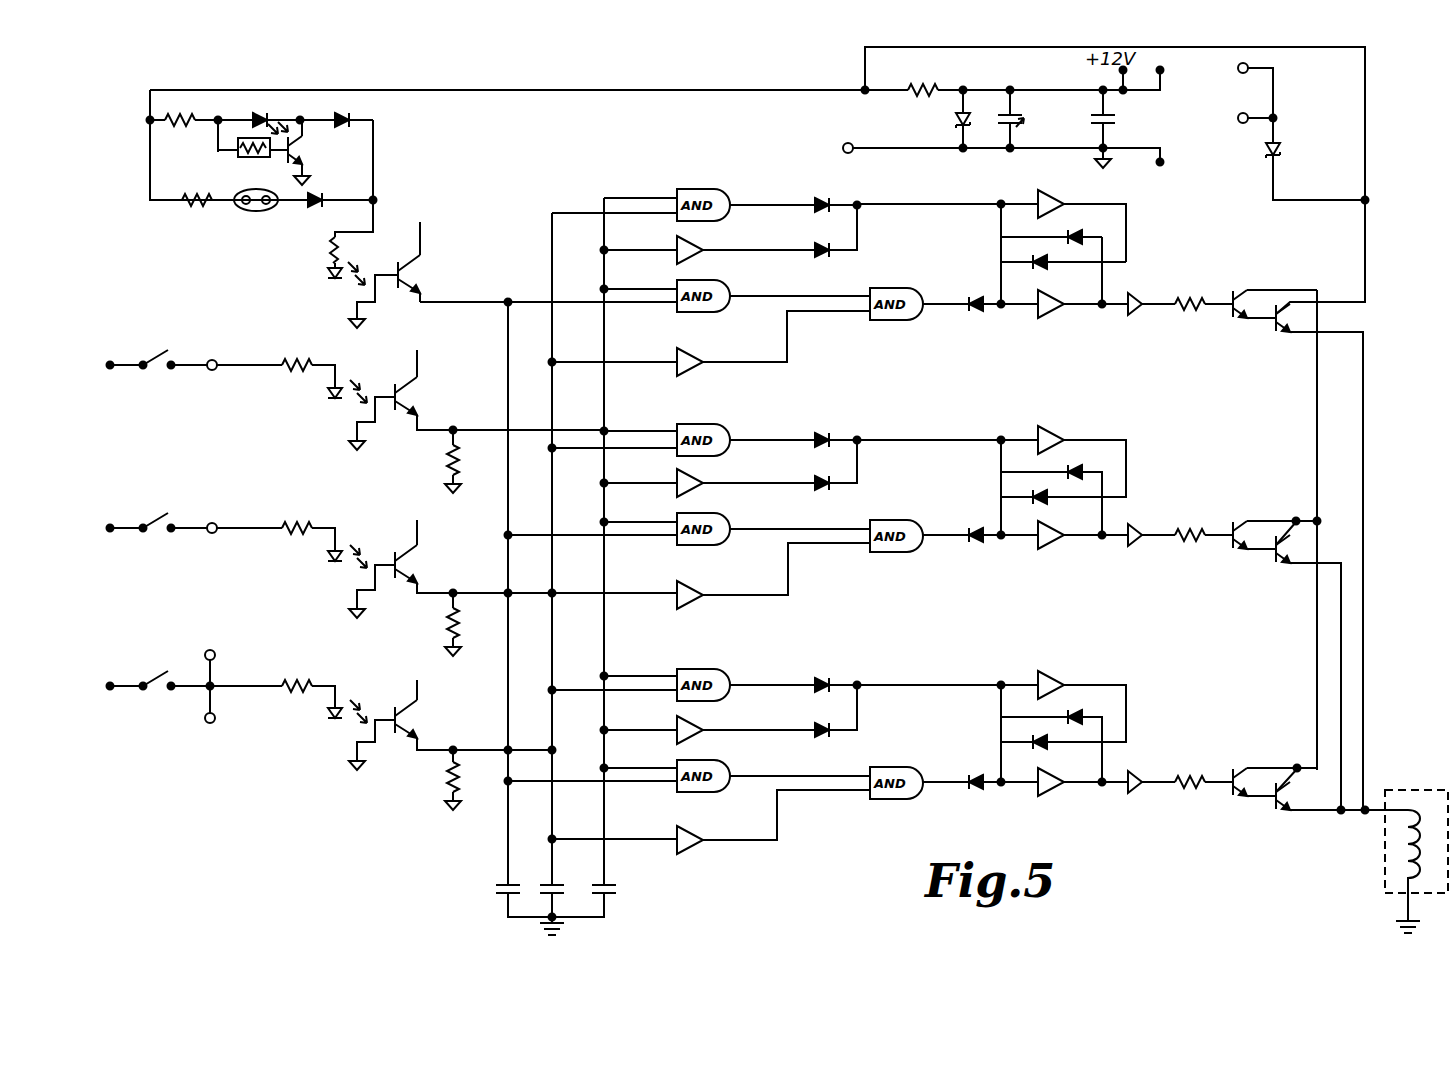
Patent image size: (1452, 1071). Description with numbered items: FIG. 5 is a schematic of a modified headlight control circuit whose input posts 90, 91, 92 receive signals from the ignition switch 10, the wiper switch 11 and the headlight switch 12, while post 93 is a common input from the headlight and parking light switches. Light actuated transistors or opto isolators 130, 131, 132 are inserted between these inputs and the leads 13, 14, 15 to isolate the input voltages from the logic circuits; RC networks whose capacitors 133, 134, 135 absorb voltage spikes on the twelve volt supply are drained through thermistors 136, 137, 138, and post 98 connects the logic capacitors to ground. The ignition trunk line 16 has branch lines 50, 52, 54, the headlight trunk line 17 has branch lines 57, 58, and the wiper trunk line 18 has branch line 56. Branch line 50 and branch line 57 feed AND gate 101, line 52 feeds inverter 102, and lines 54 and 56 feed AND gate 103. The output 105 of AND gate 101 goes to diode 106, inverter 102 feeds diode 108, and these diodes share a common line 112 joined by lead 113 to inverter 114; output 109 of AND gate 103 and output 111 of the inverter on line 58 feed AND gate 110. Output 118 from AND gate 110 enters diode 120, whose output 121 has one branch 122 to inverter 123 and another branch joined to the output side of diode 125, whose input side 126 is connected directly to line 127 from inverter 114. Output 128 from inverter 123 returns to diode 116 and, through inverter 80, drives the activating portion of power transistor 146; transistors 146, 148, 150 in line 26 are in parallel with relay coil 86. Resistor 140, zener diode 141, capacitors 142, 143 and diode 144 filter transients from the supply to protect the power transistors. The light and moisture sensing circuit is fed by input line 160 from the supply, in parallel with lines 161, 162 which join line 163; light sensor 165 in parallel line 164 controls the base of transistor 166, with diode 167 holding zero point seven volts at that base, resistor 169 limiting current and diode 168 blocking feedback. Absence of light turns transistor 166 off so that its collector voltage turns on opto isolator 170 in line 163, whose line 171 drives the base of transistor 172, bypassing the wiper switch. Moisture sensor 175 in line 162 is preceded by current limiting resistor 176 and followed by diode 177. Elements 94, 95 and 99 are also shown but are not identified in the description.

The ignition switch 10 is at (160, 356).
The wiper switch 11 is at (160, 518).
The headlight switch 12 is at (158, 678).
The lead 13 is at (455, 425).
The lead 14 is at (455, 588).
The lead 15 is at (455, 748).
The ignition trunk line 16 is at (602, 337).
The headlight switch trunk line 17 is at (548, 232).
The windshield wiper trunk line 18 is at (507, 360).
The output line 26 is at (1368, 238).
The ignition branch line 50 is at (655, 180).
The ignition branch line 52 is at (652, 238).
The ignition branch line 54 is at (652, 278).
The windshield wiper branch line 56 is at (527, 298).
The headlight switch branch line 57 is at (575, 210).
The headlight switch branch line 58 is at (650, 362).
The inverter 80 is at (1148, 298).
The relay coil 86 is at (1436, 769).
The post 90 is at (235, 335).
The post 91 is at (228, 515).
The post 92 is at (215, 650).
The post 93 is at (208, 724).
The input terminal 94 is at (1238, 68).
The input terminal 95 is at (1238, 118).
The post 98 is at (855, 142).
The conductor 99 is at (956, 160).
The AND gate 101 is at (715, 175).
The inverter 102 is at (706, 248).
The AND gate 103 is at (710, 288).
The output 105 is at (782, 190).
The diode 106 is at (855, 186).
The diode 108 is at (840, 240).
The output 109 is at (832, 282).
The AND gate 110 is at (900, 270).
The output 111 is at (790, 320).
The common line 112 is at (938, 210).
The lead 113 is at (1012, 205).
The inverter 114 is at (1065, 172).
The diode 116 is at (1098, 226).
The output 118 is at (927, 312).
The diode 120 is at (968, 295).
The output 121 is at (975, 315).
The branch 122 is at (1016, 310).
The inverter 123 is at (1060, 318).
The diode 125 is at (1035, 258).
The input side 126 is at (1128, 232).
The line 127 is at (1140, 185).
The output line 128 is at (1118, 312).
The opto isolator 130 is at (375, 348).
The opto isolator 131 is at (369, 523).
The opto isolator 132 is at (363, 662).
The capacitor 133 is at (614, 892).
The capacitor 134 is at (560, 885).
The capacitor 135 is at (496, 892).
The thermistor 136 is at (447, 455).
The thermistor 137 is at (447, 622).
The thermistor 138 is at (447, 782).
The resistor 140 is at (925, 75).
The zener diode 141 is at (960, 127).
The capacitor 142 is at (1020, 120).
The capacitor 143 is at (1115, 120).
The diode 144 is at (1282, 150).
The power transistor 146 is at (1280, 345).
The power transistor 148 is at (1278, 568).
The power transistor 150 is at (1270, 808).
The input line 160 is at (600, 92).
The line 161 is at (212, 118).
The line 162 is at (225, 205).
The line 163 is at (372, 222).
The parallel line 164 is at (214, 153).
The light sensor 165 is at (250, 160).
The transistor 166 is at (304, 146).
The diode 167 is at (270, 120).
The diode 168 is at (350, 118).
The resistor 169 is at (210, 145).
The opto isolator 170 is at (364, 260).
The line 171 is at (385, 285).
The transistor 172 is at (415, 270).
The moisture sensor 175 is at (256, 212).
The current limiting resistor 176 is at (192, 210).
The diode 177 is at (320, 196).